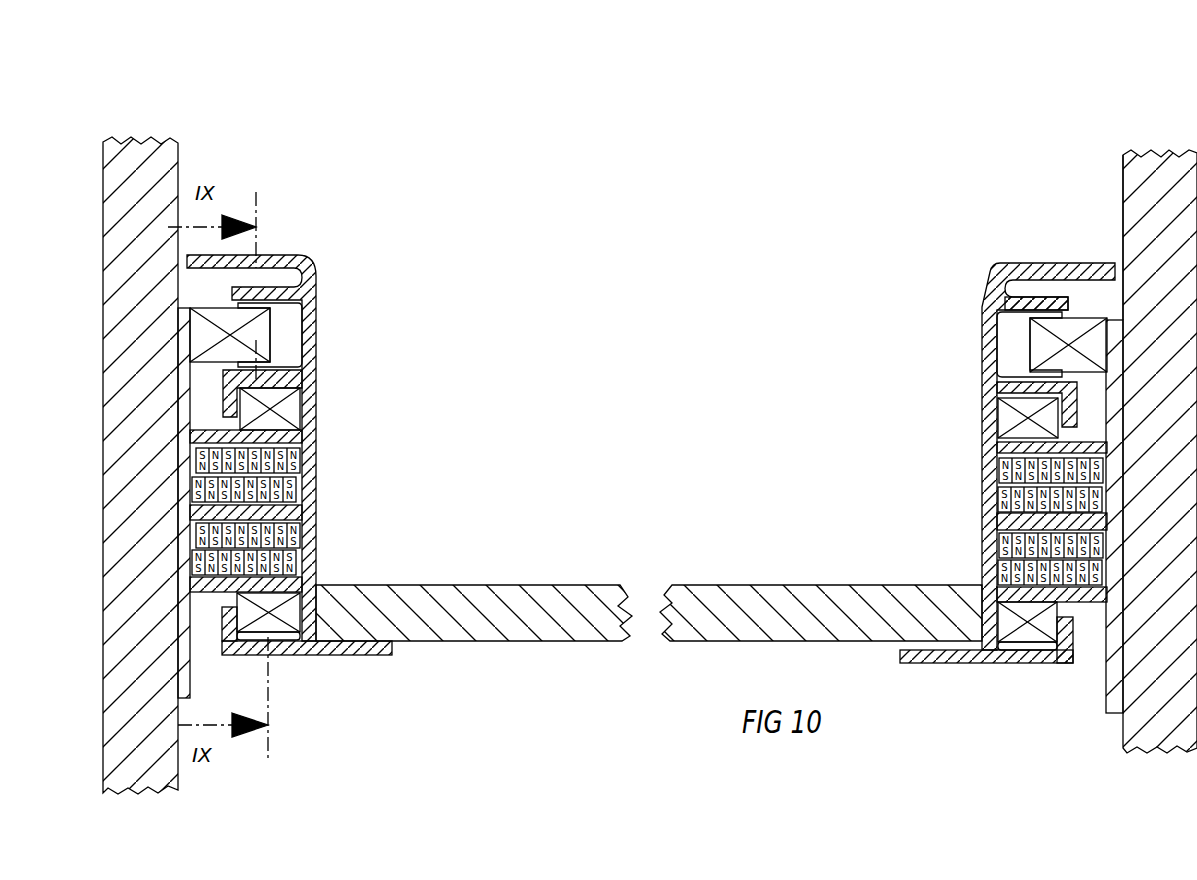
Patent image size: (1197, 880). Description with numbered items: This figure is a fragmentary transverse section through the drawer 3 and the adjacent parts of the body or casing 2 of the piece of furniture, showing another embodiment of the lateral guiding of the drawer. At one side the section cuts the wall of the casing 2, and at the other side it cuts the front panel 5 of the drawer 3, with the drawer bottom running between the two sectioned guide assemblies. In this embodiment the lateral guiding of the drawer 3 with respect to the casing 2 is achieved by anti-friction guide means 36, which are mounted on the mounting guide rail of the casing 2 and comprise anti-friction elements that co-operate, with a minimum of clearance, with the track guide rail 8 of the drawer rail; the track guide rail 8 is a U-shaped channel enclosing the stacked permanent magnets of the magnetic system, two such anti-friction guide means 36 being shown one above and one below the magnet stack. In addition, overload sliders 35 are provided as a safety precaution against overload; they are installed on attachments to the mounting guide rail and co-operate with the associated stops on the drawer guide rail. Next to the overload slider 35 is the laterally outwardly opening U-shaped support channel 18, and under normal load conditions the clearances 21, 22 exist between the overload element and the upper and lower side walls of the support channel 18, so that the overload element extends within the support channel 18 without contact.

The body or casing 2 is at (1133, 192).
The drawer 3 is at (776, 602).
The front panel 5 is at (1163, 152).
The track guide rail 8 is at (987, 493).
The support channel 18 is at (287, 348).
The clearance 21 is at (1047, 318).
The clearance 22 is at (1018, 398).
The overload slider 35 is at (263, 329).
The anti-friction guide means 36 is at (1005, 428).